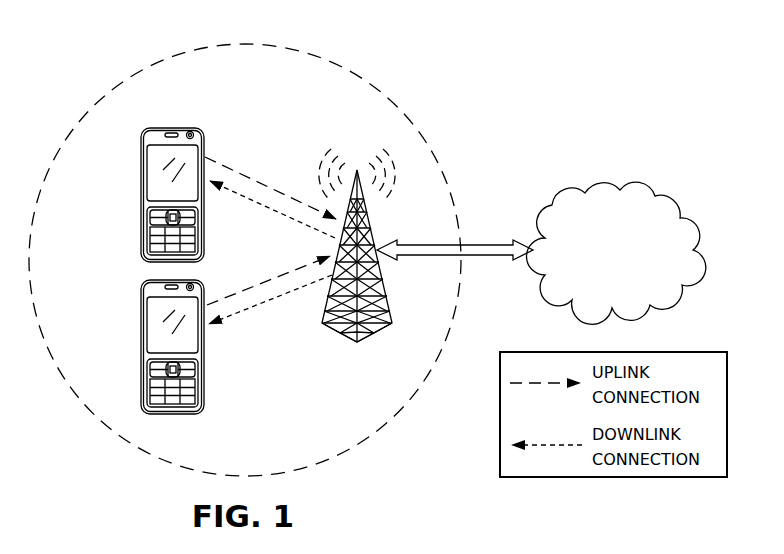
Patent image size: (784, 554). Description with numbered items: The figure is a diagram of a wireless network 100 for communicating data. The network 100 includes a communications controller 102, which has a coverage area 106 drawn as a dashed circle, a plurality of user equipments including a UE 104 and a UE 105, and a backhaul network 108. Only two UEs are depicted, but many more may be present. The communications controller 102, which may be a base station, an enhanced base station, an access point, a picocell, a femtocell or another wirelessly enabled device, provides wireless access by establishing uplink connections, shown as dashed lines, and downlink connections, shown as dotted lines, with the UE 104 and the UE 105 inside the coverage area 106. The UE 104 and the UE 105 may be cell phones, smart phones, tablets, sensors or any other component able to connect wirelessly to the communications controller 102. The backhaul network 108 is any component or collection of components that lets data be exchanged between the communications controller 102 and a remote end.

The network 100 is at (503, 116).
The communications controller 102 is at (373, 330).
The UE 104 is at (141, 193).
The UE 105 is at (141, 345).
The coverage area 106 is at (143, 66).
The backhaul network 108 is at (613, 189).